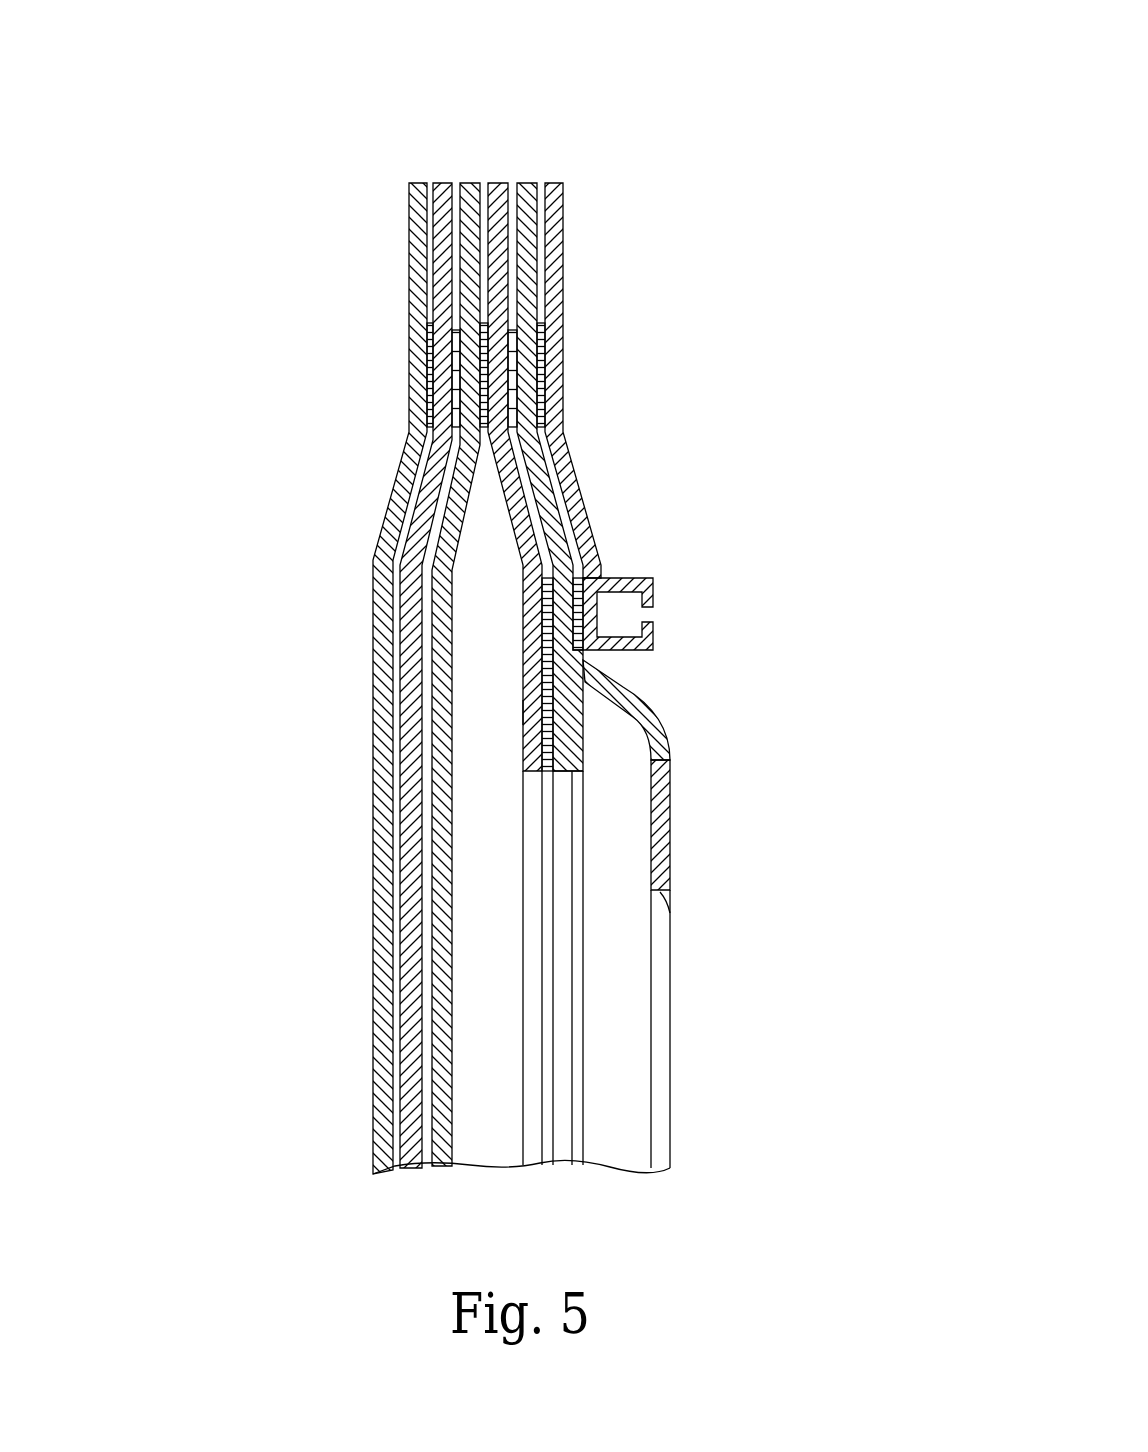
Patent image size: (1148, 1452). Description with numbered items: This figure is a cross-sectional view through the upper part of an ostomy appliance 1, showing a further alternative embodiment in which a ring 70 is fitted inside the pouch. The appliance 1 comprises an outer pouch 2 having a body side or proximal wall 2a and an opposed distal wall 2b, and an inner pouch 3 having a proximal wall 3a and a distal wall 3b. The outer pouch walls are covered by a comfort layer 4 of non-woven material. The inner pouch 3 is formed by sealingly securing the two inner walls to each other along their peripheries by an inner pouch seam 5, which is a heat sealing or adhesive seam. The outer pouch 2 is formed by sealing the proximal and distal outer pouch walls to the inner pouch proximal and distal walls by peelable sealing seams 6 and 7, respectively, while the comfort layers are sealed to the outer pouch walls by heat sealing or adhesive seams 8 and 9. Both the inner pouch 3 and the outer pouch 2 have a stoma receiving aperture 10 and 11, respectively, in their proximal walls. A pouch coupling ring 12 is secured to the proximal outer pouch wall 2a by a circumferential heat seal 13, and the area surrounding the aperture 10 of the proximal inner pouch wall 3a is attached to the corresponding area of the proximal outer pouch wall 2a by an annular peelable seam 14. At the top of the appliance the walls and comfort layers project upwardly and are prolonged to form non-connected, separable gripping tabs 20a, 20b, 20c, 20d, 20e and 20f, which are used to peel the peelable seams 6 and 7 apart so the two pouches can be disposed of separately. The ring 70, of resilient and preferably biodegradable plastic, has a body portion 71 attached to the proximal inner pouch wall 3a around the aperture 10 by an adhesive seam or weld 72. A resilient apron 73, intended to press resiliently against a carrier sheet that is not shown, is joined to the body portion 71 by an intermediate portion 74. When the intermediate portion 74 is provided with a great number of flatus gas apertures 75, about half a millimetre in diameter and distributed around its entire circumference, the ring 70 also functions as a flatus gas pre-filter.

The ostomy appliance 1 is at (485, 597).
The outer pouch 2 is at (372, 613).
The proximal wall 2a is at (586, 414).
The distal wall 2b is at (372, 613).
The inner pouch 3 is at (401, 593).
The proximal wall 3a is at (572, 395).
The distal wall 3b is at (401, 593).
The comfort layer 4 is at (486, 634).
The inner pouch seam 5 is at (482, 426).
The peelable sealing seam 6 is at (513, 378).
The peelable sealing seam 7 is at (458, 376).
The heat sealing or adhesive seam 8 is at (545, 326).
The heat sealing or adhesive seam 9 is at (430, 336).
The stoma receiving aperture 10 is at (532, 1053).
The stoma receiving aperture 11 is at (560, 1130).
The pouch coupling ring 12 is at (652, 580).
The circumferential heat seal 13 is at (582, 657).
The annular peelable seam 14 is at (545, 604).
The gripping tab 20a is at (413, 183).
The gripping tab 20b is at (443, 183).
The gripping tab 20c is at (477, 183).
The gripping tab 20d is at (500, 183).
The gripping tab 20e is at (530, 183).
The gripping tab 20f is at (558, 183).
The ring 70 is at (680, 777).
The body portion 71 is at (525, 712).
The adhesive seam or weld 72 is at (585, 752).
The resilient apron 73 is at (670, 917).
The intermediate portion 74 is at (680, 712).
The flatus gas apertures 75 is at (643, 700).